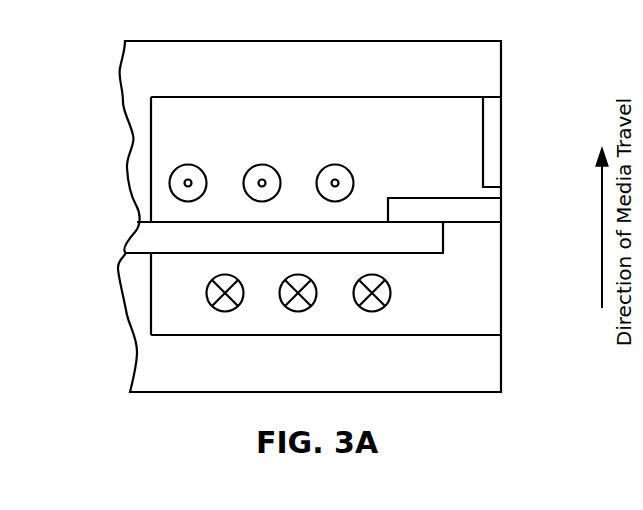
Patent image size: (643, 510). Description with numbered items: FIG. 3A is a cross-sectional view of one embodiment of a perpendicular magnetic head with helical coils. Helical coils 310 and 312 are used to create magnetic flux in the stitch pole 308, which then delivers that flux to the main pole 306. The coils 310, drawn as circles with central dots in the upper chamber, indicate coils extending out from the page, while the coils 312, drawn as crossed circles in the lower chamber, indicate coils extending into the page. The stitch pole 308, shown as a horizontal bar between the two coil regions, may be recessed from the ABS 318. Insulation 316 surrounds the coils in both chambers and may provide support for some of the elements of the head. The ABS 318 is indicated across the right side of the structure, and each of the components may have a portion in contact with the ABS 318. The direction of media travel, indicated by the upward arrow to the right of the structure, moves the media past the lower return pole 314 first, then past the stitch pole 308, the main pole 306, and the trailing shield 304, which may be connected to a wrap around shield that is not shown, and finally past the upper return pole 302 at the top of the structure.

The upper return pole 302 is at (365, 79).
The trailing shield 304 is at (501, 146).
The main pole 306 is at (501, 205).
The stitch pole 308 is at (309, 249).
The helical coils (extending out from the page) 310 is at (185, 165).
The helical coils (extending into the page) 312 is at (206, 297).
The lower return pole 314 is at (307, 374).
The insulation 316 is at (407, 156).
The ABS 318 is at (501, 62).